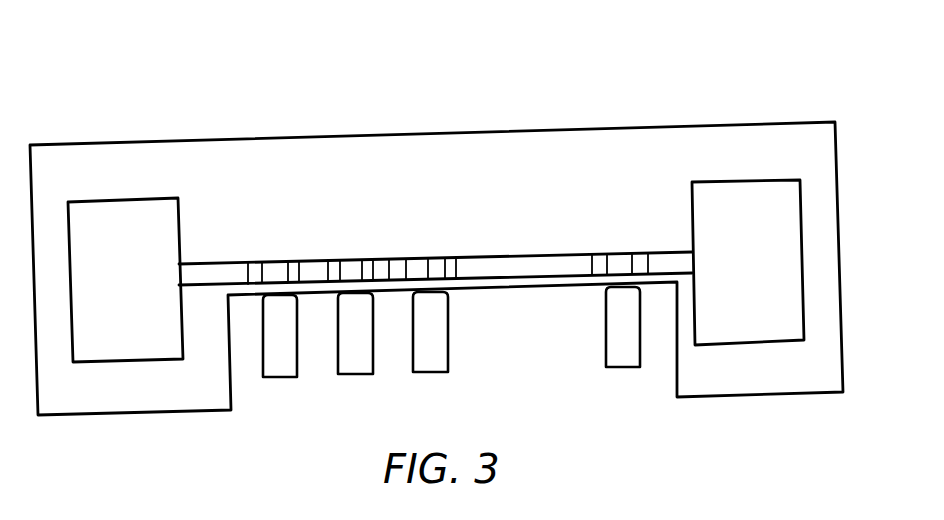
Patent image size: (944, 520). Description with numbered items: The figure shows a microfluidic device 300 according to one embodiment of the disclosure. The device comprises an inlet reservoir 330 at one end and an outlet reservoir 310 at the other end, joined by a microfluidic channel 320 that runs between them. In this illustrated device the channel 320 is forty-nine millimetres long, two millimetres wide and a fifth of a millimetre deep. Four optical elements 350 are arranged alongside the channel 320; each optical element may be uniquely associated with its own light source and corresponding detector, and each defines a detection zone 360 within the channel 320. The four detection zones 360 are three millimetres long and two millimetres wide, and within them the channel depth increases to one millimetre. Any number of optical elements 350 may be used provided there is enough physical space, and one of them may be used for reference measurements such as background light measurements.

The microfluidic device 300 is at (630, 82).
The outlet reservoir 310 is at (123, 222).
The microfluidic channel 320 is at (523, 268).
The inlet reservoir 330 is at (748, 202).
The optical elements 350 is at (282, 377).
The detection zone 360 is at (280, 272).